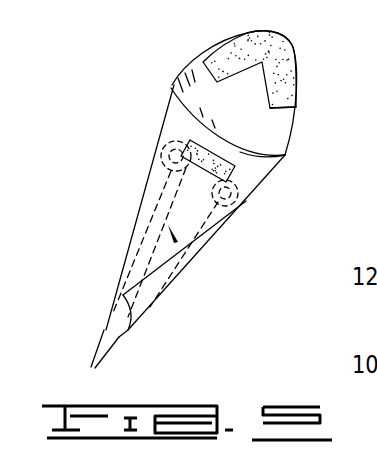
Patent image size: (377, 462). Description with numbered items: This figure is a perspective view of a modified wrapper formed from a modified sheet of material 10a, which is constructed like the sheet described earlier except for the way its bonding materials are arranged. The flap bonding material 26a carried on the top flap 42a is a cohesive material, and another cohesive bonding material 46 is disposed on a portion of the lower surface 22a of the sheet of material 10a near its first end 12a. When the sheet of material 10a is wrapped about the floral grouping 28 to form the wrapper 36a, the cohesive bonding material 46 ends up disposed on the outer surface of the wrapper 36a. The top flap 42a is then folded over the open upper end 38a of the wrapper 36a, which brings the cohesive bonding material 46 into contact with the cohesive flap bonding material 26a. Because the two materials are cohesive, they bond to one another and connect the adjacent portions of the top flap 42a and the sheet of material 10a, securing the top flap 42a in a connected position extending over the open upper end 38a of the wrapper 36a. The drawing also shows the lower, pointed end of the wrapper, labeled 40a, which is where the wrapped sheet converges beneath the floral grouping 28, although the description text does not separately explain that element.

The sheet of material 10a is at (147, 183).
The first end 12a is at (197, 67).
The lower surface 22a is at (167, 115).
The flap bonding material 26a is at (283, 67).
The floral grouping 28 is at (193, 273).
The wrapper 36a is at (128, 228).
The open upper end 38a is at (260, 157).
The dispensing tip 40a is at (115, 348).
The top flap 42a is at (272, 128).
The cohesive bonding material 46 is at (238, 172).